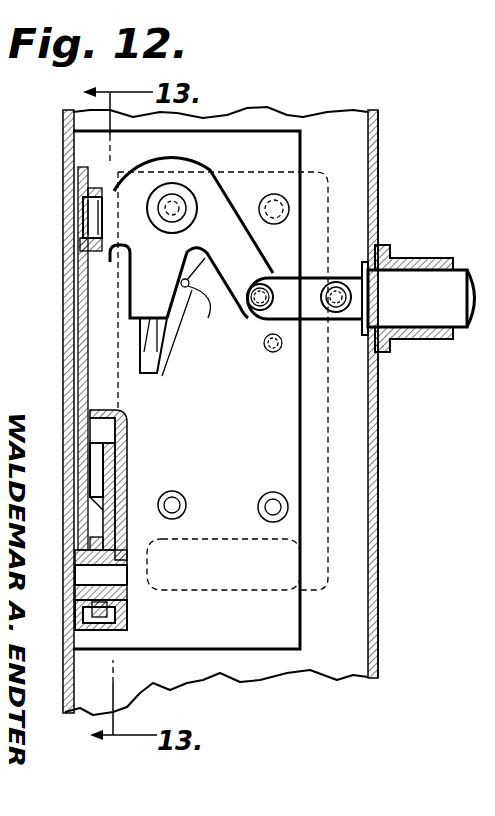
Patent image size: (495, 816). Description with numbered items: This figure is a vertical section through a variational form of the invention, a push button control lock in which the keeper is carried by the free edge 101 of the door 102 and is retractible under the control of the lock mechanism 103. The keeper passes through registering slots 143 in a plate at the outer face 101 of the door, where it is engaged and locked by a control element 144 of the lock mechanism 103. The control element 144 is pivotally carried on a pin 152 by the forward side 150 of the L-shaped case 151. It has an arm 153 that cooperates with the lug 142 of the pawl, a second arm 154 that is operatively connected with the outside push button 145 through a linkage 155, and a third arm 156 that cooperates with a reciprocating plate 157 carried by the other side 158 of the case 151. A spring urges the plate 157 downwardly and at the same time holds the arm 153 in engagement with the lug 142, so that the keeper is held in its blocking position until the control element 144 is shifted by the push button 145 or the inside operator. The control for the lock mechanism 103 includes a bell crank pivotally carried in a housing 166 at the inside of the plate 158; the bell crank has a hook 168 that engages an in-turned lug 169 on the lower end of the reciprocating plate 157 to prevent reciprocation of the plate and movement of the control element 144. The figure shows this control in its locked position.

The free edge of the door 101 is at (353, 180).
The door 102 is at (380, 160).
The lock mechanism 103 is at (106, 358).
The lug of the pawl 142 is at (152, 334).
The registering slots 143 is at (201, 299).
The control element 144 is at (130, 283).
The outside push button 145 is at (418, 298).
The forward side of the L-shaped case 150 is at (275, 135).
The L-shaped case 151 is at (62, 146).
The pin 152 is at (172, 208).
The arm of the control element 153 is at (142, 302).
The second arm of the control element 154 is at (250, 258).
The linkage 155 is at (307, 306).
The third arm of the control element 156 is at (107, 210).
The reciprocating plate 157 is at (85, 387).
The other side of the case 158 is at (78, 170).
The housing 166 is at (130, 617).
The hook 168 is at (97, 458).
The in-turned lug 169 is at (100, 488).